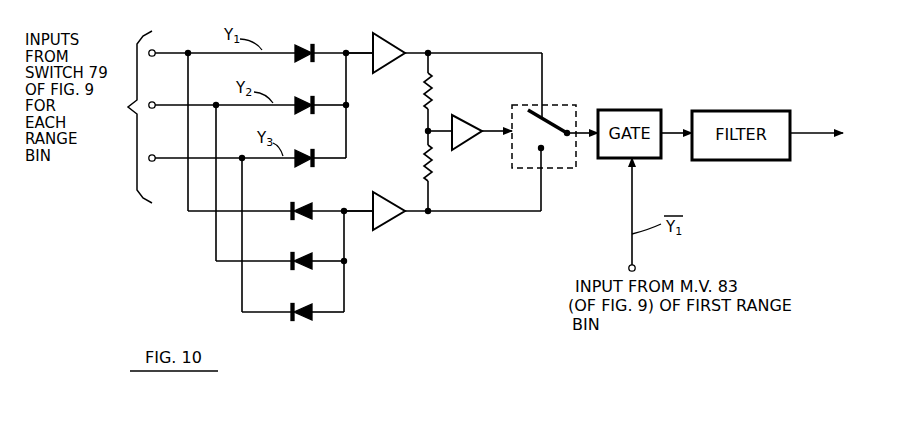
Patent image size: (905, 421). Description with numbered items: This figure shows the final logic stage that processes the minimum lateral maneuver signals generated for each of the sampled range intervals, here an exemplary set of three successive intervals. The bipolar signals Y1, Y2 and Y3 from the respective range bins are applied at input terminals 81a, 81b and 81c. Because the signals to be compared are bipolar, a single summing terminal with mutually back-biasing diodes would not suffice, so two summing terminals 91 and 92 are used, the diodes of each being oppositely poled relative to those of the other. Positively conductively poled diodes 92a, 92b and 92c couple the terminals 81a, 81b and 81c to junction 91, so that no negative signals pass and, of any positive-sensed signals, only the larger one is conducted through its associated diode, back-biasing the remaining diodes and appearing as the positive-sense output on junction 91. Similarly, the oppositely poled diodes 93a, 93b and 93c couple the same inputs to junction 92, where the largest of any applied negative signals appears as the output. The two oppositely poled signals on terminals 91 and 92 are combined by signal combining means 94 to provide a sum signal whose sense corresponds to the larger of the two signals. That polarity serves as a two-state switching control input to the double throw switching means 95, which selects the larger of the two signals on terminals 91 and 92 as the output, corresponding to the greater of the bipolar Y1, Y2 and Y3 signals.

The input terminal 81a is at (155, 57).
The input terminal 81b is at (155, 109).
The input terminal 81c is at (154, 162).
The summing terminal 91 is at (350, 57).
The summing terminal 92 is at (348, 214).
The positively conductively poled diode 92a is at (303, 44).
The positively conductively poled diode 92b is at (302, 96).
The positively conductively poled diode 92c is at (302, 148).
The oppositely poled diode 93a is at (305, 204).
The oppositely poled diode 93b is at (303, 255).
The oppositely poled diode 93c is at (303, 307).
The signal combining means 94 is at (480, 201).
The double throw switching means 95 is at (548, 150).